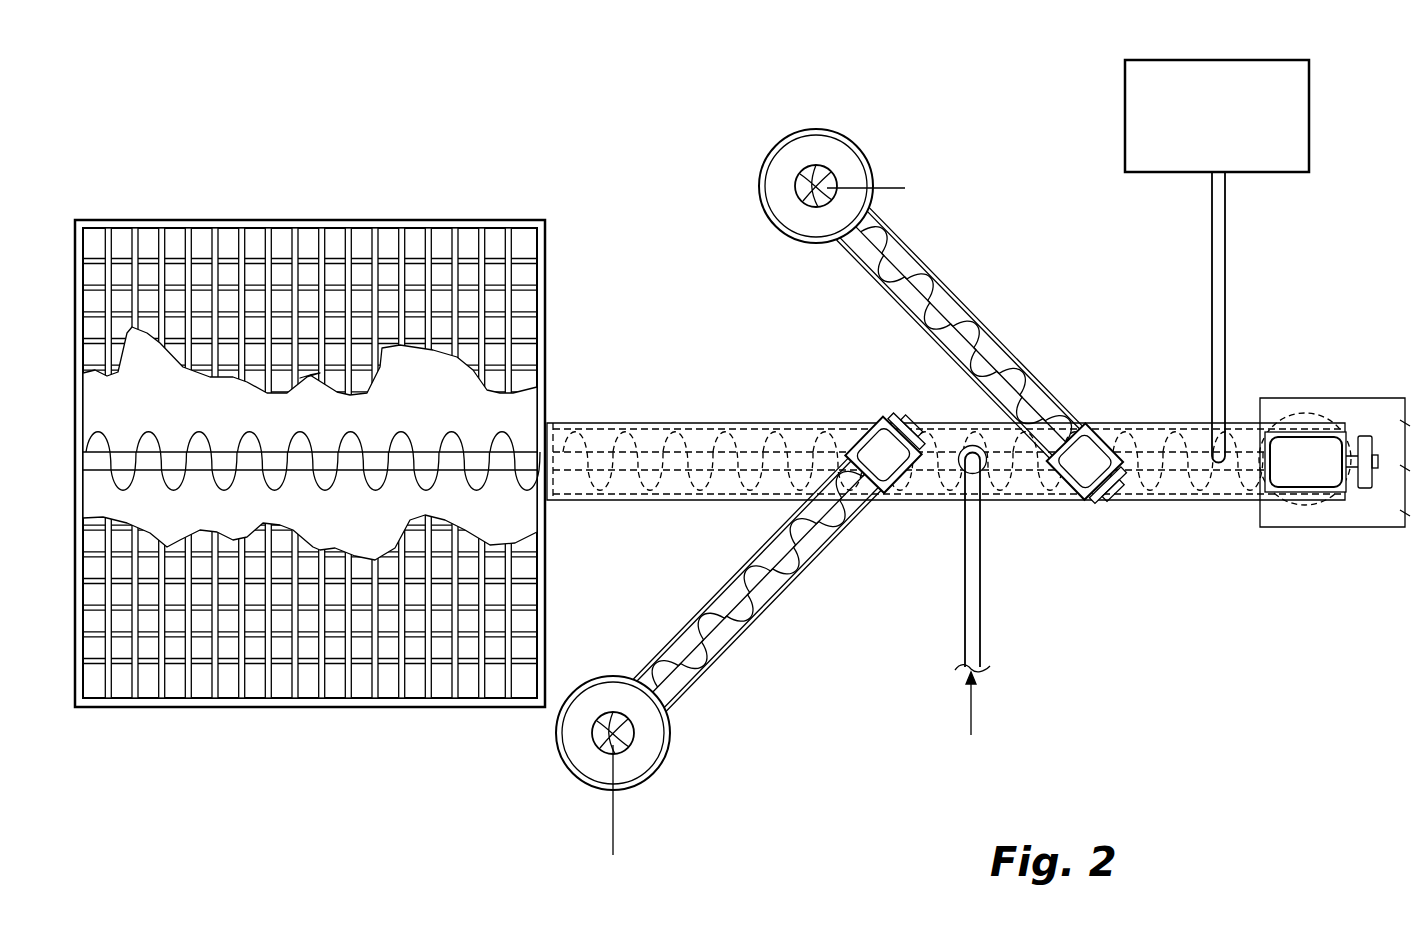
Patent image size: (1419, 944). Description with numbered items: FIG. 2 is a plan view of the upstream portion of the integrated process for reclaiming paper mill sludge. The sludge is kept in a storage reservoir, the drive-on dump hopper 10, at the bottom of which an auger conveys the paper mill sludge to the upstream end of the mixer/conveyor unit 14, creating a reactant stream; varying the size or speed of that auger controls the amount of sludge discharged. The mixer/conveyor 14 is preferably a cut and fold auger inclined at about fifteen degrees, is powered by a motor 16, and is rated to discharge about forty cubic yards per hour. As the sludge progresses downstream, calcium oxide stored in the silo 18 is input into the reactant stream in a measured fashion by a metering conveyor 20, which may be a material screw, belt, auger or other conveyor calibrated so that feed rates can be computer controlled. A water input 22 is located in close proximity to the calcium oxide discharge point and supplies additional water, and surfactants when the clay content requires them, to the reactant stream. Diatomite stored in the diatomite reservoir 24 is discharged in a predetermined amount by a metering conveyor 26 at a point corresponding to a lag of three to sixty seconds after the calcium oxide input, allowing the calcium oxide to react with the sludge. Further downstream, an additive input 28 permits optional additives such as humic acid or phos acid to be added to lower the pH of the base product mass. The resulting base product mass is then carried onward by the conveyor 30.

The drive-on dump hopper 10 is at (498, 220).
The mixer/conveyor unit 14 is at (713, 422).
The motor 16 is at (1305, 480).
The silo 18 is at (650, 737).
The metering conveyor 20 is at (745, 632).
The water input 22 is at (978, 604).
The diatomite reservoir 24 is at (848, 163).
The metering conveyor 26 is at (980, 330).
The additive input 28 is at (1287, 158).
The conveyor 30 is at (1370, 405).